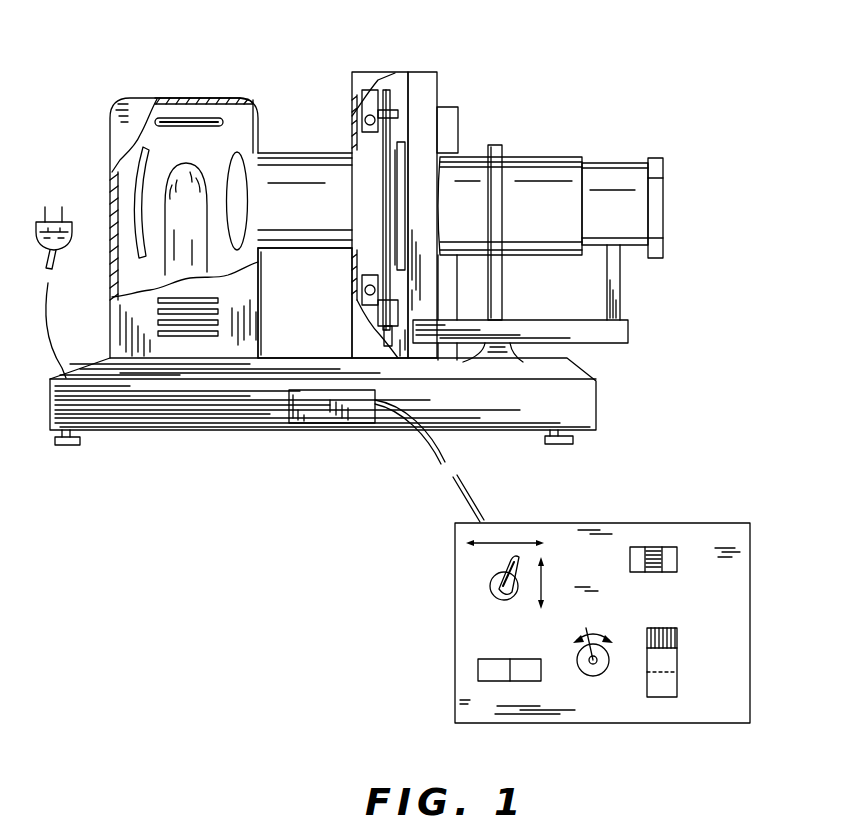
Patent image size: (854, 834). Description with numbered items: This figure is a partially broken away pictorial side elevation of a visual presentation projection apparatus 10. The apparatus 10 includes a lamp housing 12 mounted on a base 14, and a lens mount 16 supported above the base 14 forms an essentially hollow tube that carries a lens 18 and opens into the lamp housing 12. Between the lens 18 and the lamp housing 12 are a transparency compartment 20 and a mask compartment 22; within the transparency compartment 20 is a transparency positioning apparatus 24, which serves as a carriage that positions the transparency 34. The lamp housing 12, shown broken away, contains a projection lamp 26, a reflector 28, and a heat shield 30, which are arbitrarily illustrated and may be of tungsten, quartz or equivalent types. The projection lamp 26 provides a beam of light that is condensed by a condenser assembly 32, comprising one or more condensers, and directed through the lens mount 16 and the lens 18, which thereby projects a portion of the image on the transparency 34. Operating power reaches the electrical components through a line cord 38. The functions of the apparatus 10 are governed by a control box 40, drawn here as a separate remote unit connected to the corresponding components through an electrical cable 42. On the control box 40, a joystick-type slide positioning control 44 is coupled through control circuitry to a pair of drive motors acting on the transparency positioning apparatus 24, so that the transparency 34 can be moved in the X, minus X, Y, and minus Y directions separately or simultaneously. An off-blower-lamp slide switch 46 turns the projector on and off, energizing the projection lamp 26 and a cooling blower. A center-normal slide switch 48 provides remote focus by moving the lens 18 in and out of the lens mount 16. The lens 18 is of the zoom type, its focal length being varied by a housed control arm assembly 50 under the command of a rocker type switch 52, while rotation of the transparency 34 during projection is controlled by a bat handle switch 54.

The visual presentation projection apparatus 10 is at (425, 48).
The lamp housing 12 is at (118, 90).
The base 14 is at (120, 431).
The lens mount 16 is at (533, 156).
The lens 18 is at (622, 162).
The transparency compartment 20 is at (352, 86).
The mask compartment 22 is at (437, 80).
The transparency positioning apparatus 24 is at (360, 258).
The projection lamp 26 is at (204, 169).
The reflector 28 is at (135, 176).
The heat shield 30 is at (192, 117).
The condenser assembly 32 is at (227, 169).
The transparency 34 is at (405, 163).
The line cord 38 is at (49, 312).
The control box 40 is at (583, 523).
The electrical cable 42 is at (450, 492).
The slide positioning control 44 is at (452, 595).
The off-blower-lamp slide switch 46 is at (664, 628).
The center-normal slide switch 48 is at (630, 556).
The housed control arm assembly 50 is at (668, 325).
The rocker type switch 52 is at (477, 664).
The bat handle switch 54 is at (589, 652).